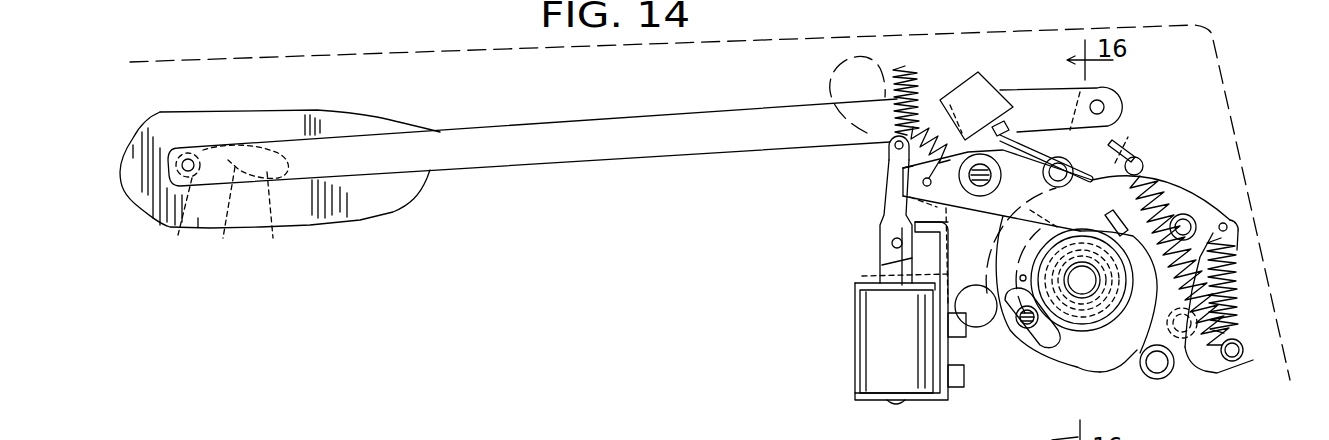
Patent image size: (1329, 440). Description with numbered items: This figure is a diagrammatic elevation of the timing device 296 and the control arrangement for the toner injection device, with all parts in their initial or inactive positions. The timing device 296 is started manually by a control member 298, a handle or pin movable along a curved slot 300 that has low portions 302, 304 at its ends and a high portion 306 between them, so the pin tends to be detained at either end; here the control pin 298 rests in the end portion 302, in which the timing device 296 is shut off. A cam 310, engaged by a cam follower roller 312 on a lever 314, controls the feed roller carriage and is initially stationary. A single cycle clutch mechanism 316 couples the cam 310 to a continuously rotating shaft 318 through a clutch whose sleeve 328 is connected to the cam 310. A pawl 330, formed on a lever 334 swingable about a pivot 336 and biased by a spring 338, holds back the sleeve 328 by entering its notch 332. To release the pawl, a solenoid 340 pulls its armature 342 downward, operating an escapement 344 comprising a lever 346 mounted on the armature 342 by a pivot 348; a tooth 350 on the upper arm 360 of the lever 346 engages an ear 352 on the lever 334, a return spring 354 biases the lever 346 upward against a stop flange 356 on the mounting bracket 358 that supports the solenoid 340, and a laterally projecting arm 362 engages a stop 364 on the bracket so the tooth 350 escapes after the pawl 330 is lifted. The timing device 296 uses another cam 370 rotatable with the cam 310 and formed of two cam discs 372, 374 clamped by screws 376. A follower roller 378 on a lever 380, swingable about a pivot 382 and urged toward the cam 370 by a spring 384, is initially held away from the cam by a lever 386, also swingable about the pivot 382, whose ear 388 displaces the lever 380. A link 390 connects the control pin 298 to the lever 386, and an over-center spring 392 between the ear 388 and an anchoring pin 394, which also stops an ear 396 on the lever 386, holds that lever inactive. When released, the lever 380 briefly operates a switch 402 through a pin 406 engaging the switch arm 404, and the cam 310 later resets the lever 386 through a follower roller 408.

The timing device 296 is at (1210, 132).
The manually movable control member 298 is at (190, 158).
The curved slot 300 is at (250, 152).
The low end portion of slot 302 is at (181, 217).
The low end portion of slot 304 is at (287, 214).
The high portion of slot 306 is at (229, 216).
The cam 310 is at (1105, 395).
The cam follower roller 312 is at (983, 326).
The lever 314 is at (858, 278).
The single cycle clutch mechanism 316 is at (792, 350).
The shaft 318 is at (1076, 280).
The sleeve 328 is at (1128, 148).
The pawl 330 is at (1167, 200).
The notch 332 is at (1197, 215).
The lever 334 is at (1056, 145).
The pivot 336 is at (980, 196).
The spring 338 is at (963, 80).
The solenoid 340 is at (870, 317).
The armature 342 is at (878, 256).
The escapement 344 is at (861, 180).
The lever 346 is at (873, 203).
The pivot 348 is at (893, 242).
The tooth 350 is at (880, 167).
The ear 352 is at (866, 190).
The return spring 354 is at (893, 97).
The stop flange 356 is at (880, 222).
The mounting bracket 358 is at (950, 372).
The upper arm 360 is at (886, 155).
The laterally projecting arm 362 is at (912, 262).
The stop 364 is at (938, 237).
The adjustable cam 370 is at (1118, 378).
The cam disc 372 is at (1147, 373).
The cam disc 374 is at (1087, 368).
The screws 376 is at (1025, 345).
The follower roller 378 is at (1174, 380).
The lever 380 is at (1175, 212).
The pivot 382 is at (1227, 231).
The spring 384 is at (1236, 262).
The lever 386 is at (1132, 150).
The ear 388 is at (1143, 147).
The link 390 is at (608, 158).
The over-center spring 392 is at (1160, 165).
The anchoring pin 394 is at (1243, 346).
The ear 396 is at (1217, 374).
The switch 402 is at (983, 73).
The switch arm 404 is at (1018, 140).
The pin 406 is at (1015, 193).
The follower roller 408 is at (1225, 300).